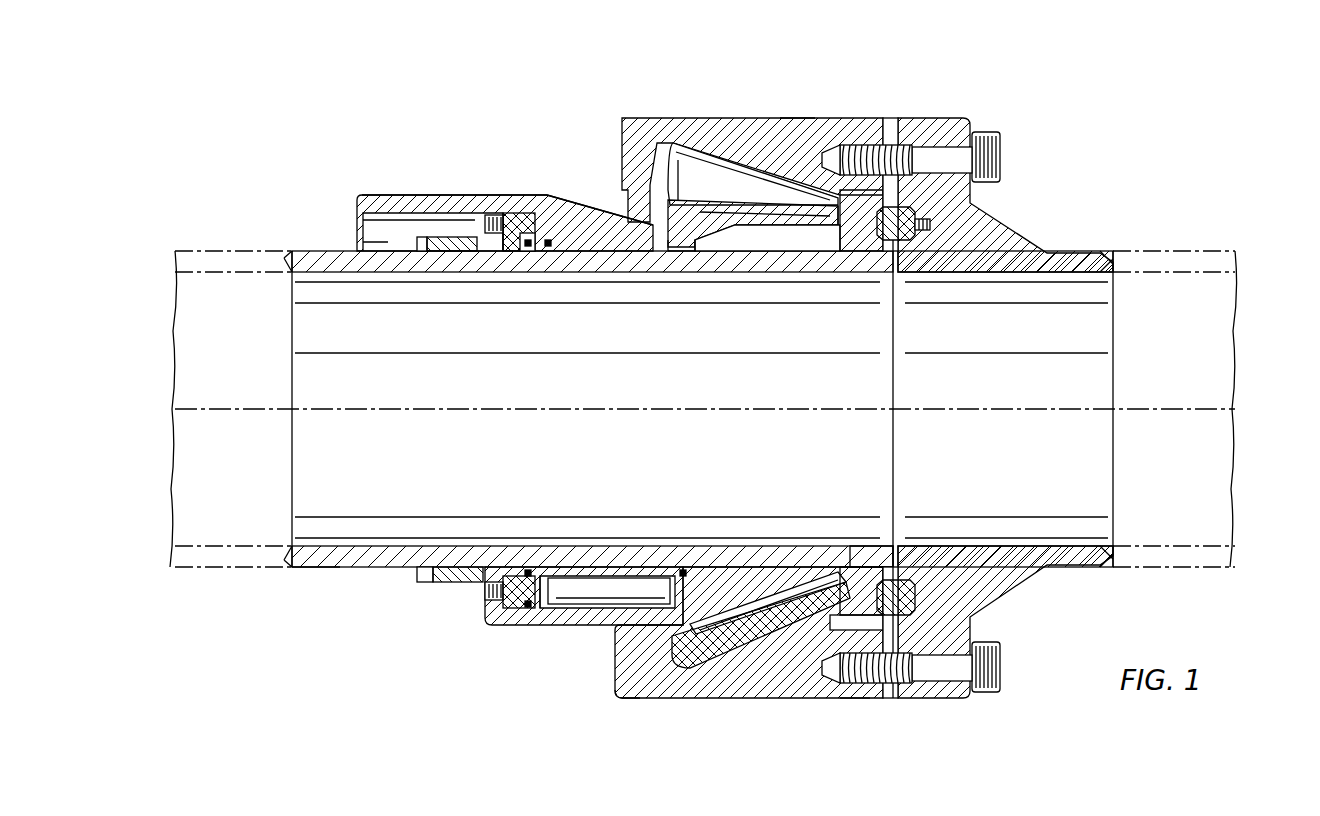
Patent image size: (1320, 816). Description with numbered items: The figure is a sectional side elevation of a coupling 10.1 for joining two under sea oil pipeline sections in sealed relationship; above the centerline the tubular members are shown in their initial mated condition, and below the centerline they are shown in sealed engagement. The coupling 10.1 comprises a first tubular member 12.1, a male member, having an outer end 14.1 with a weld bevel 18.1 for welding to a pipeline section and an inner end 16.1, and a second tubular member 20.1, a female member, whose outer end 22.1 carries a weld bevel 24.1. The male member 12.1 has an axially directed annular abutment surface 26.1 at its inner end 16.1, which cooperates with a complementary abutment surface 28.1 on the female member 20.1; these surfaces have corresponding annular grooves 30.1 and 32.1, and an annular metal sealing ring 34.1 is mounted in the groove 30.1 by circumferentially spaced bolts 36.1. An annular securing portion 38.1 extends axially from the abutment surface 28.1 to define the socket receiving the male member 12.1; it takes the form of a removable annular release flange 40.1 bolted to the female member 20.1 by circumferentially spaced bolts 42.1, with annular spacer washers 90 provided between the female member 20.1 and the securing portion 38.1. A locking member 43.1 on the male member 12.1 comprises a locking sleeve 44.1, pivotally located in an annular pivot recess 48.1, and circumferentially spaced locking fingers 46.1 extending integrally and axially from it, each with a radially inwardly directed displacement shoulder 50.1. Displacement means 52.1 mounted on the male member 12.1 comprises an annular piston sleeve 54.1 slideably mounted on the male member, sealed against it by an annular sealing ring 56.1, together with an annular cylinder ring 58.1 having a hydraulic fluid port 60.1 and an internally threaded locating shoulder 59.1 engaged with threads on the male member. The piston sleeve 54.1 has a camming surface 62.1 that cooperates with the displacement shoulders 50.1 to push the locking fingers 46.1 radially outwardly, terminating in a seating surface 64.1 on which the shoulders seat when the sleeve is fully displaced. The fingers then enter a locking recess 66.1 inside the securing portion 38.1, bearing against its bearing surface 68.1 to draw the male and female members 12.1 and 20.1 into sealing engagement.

The coupling 10.1 is at (1070, 156).
The first tubular member 12.1 is at (310, 590).
The outer end 14.1 is at (310, 251).
The inner end 16.1 is at (866, 536).
The weld bevel 18.1 is at (288, 251).
The second tubular member 20.1 is at (1068, 221).
The outer end 22.1 is at (1122, 222).
The weld bevel 24.1 is at (1172, 224).
The abutment surface 26.1 is at (893, 367).
The abutment surface 28.1 is at (897, 374).
The annular groove 30.1 is at (856, 698).
The annular groove 32.1 is at (935, 560).
The annular metal sealing ring 34.1 is at (900, 207).
The bolts 36.1 is at (924, 216).
The annular securing portion 38.1 is at (778, 108).
The release flange 40.1 is at (640, 118).
The bolts 42.1 is at (985, 140).
The locking member 43.1 is at (800, 118).
The locking sleeve 44.1 is at (822, 233).
The locking fingers 46.1 is at (770, 217).
The annular pivot recess 48.1 is at (838, 243).
The displacement shoulder 50.1 is at (690, 245).
The displacement means 52.1 is at (388, 172).
The annular piston sleeve 54.1 is at (437, 193).
The annular sealing ring 56.1 is at (534, 246).
The annular cylinder ring 58.1 is at (497, 235).
The locating shoulder 59.1 is at (447, 253).
The hydraulic fluid port 60.1 is at (478, 214).
The camming surface 62.1 is at (590, 208).
The seating surface 64.1 is at (548, 197).
The locking recess 66.1 is at (746, 118).
The bearing surface 68.1 is at (690, 118).
The annular spacer washers 90 is at (888, 698).